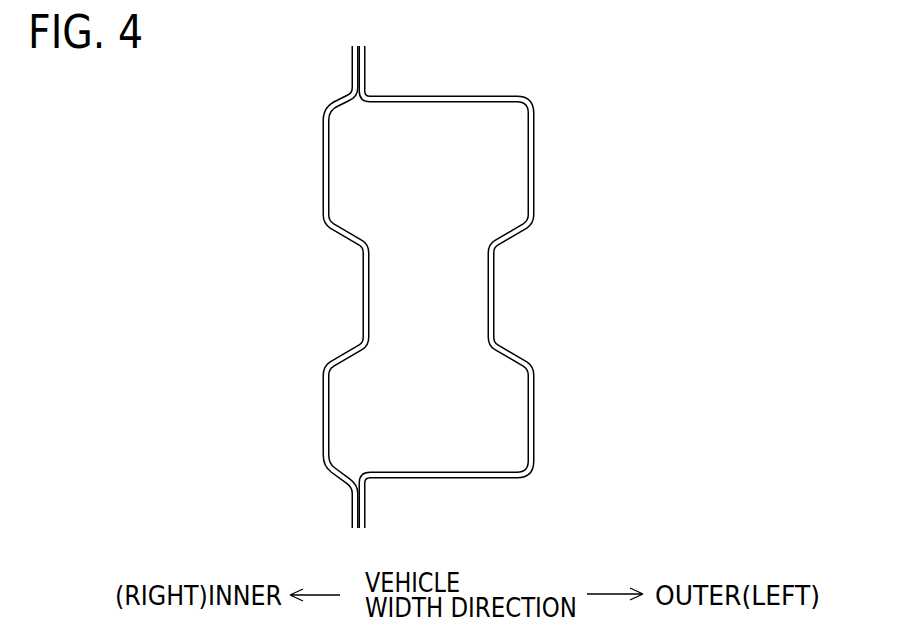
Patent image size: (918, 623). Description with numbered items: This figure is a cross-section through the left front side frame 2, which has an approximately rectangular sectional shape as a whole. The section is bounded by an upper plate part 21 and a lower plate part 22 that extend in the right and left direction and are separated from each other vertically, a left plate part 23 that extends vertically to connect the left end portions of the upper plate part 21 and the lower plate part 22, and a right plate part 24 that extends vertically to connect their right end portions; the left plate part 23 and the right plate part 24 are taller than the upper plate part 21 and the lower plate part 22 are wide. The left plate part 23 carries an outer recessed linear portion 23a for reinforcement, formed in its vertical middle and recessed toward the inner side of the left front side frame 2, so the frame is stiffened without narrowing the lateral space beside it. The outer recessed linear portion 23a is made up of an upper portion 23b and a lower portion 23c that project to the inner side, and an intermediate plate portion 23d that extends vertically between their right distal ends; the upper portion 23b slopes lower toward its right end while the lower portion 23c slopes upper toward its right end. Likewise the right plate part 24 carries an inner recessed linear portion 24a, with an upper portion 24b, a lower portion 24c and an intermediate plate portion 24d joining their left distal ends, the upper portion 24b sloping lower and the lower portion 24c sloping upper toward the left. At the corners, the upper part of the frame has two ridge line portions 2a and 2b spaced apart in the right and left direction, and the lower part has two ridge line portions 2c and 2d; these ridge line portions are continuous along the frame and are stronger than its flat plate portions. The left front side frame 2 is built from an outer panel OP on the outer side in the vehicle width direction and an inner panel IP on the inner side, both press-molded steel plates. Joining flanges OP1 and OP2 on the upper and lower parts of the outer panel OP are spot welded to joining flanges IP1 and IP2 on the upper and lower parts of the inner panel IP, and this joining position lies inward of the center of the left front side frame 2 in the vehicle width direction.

The left front side frame 2 is at (427, 284).
The upper plate part 21 is at (440, 97).
The lower plate part 22 is at (457, 478).
The left plate part 23 is at (575, 287).
The outer recessed linear portion 23a is at (575, 295).
The upper portion 23b is at (513, 240).
The lower portion 23c is at (507, 350).
The intermediate plate portion 23d is at (496, 291).
The right plate part 24 is at (280, 287).
The inner recessed linear portion 24a is at (280, 295).
The upper portion 24b is at (346, 240).
The lower portion 24c is at (315, 343).
The intermediate plate portion 24d is at (362, 291).
The ridge line portion 2a is at (528, 101).
The ridge line portion 2b is at (337, 100).
The ridge line portion 2c is at (531, 470).
The ridge line portion 2d is at (323, 467).
The inner panel IP is at (280, 274).
The outer panel OP is at (508, 284).
The joining flange IP1 is at (350, 62).
The joining flange IP2 is at (352, 503).
The joining flange OP1 is at (367, 64).
The joining flange OP2 is at (366, 496).